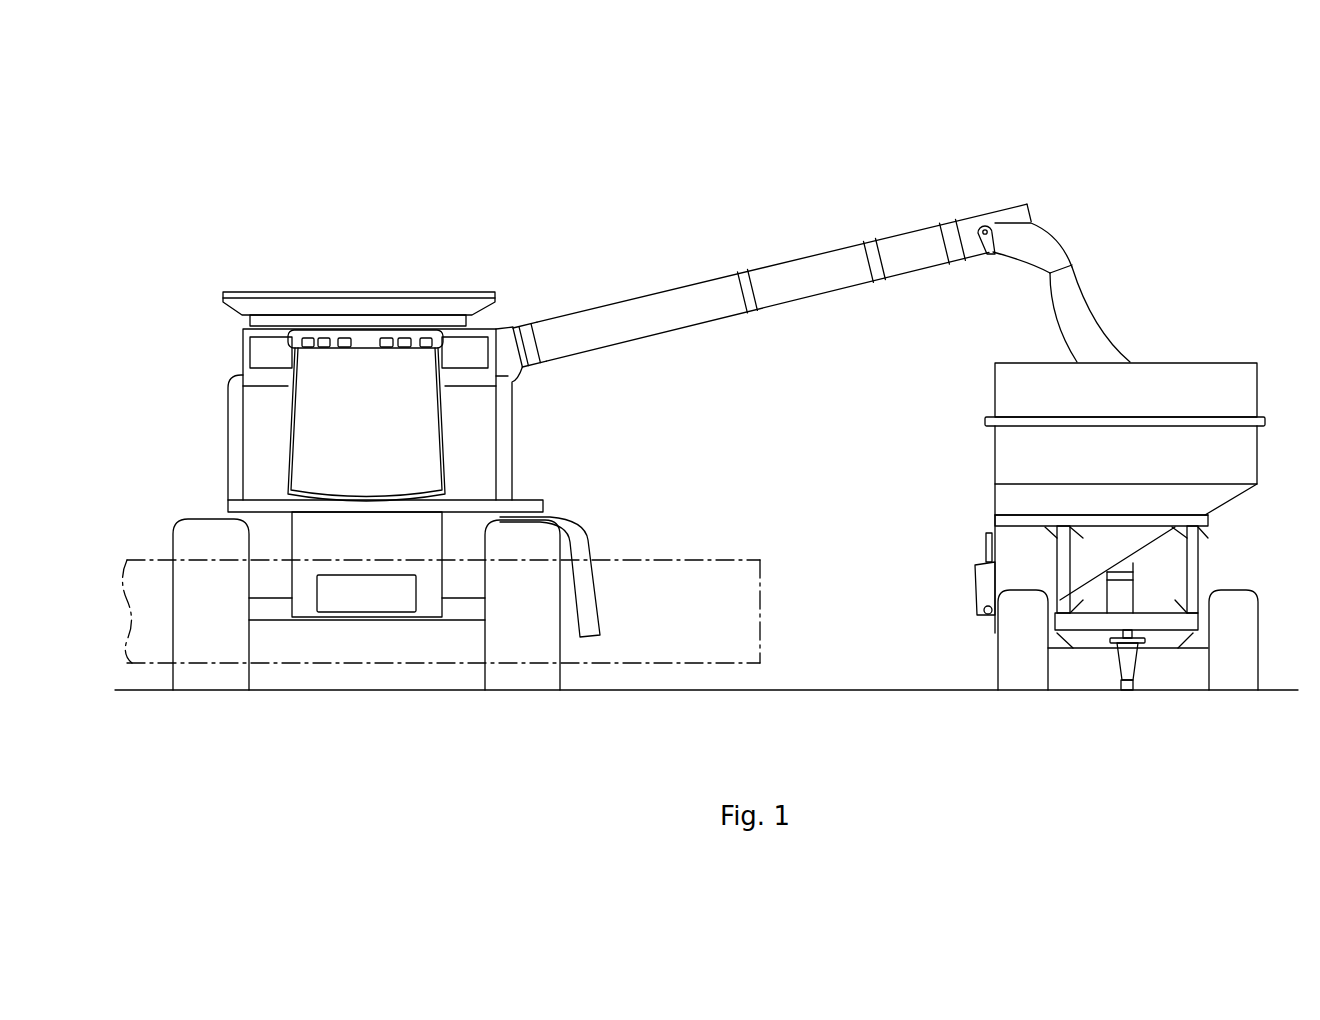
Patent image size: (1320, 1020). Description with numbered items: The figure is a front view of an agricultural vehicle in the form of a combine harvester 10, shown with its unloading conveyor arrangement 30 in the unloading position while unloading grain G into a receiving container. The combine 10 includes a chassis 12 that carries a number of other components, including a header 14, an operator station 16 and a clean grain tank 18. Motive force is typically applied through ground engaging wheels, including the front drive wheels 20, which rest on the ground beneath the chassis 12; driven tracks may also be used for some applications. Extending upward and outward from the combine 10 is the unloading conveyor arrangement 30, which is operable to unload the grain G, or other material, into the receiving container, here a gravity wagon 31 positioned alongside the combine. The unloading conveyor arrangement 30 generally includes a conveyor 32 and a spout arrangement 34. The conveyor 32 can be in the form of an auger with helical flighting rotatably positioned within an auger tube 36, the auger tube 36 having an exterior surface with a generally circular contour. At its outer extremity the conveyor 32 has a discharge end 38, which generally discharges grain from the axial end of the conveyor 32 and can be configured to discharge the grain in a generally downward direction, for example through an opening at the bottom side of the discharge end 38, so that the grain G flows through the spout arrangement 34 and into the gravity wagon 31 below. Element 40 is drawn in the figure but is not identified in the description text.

The combine harvester 10 is at (339, 252).
The chassis 12 is at (535, 498).
The header 14 is at (718, 560).
The operator station 16 is at (283, 438).
The clean grain tank 18 is at (272, 292).
The front drive wheels 20 is at (216, 679).
The unloading conveyor arrangement 30 is at (952, 146).
The gravity wagon 31 is at (979, 455).
The conveyor 32 is at (760, 253).
The spout arrangement 34 is at (1009, 273).
The auger tube 36 is at (650, 337).
The discharge end 38 is at (998, 204).
The spout 40 is at (1050, 250).
The grain G is at (1097, 320).